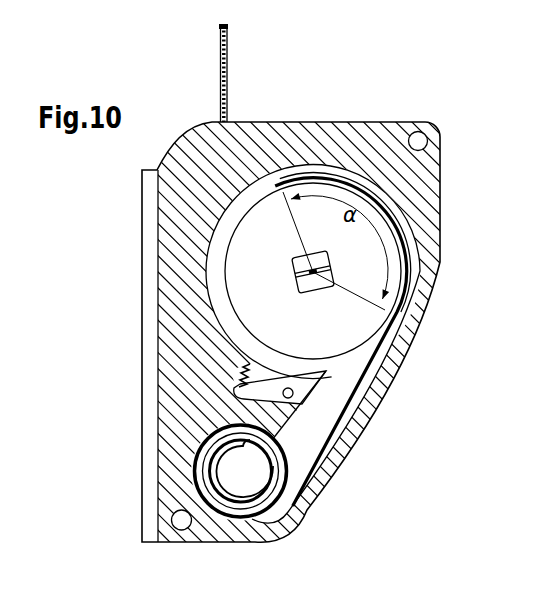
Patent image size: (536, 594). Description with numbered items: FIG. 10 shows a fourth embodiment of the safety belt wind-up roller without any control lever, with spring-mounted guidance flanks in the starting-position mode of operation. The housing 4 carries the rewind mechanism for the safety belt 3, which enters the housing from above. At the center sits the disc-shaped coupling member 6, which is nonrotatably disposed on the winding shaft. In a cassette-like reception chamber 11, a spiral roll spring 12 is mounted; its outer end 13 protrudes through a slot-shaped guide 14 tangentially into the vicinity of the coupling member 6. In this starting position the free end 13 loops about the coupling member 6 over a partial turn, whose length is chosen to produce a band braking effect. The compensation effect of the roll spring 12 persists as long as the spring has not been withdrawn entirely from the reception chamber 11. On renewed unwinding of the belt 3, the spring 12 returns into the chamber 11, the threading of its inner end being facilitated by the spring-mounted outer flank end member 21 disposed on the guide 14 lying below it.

The safety belt 3 is at (228, 50).
The housing 4 is at (373, 131).
The coupling member 6 is at (397, 271).
The reception chamber 11 is at (258, 470).
The roll spring 12 is at (284, 498).
The outer end of the roll spring 13 is at (300, 178).
The slot-shaped guide 14 is at (358, 394).
The outer flank end member 21 is at (305, 385).